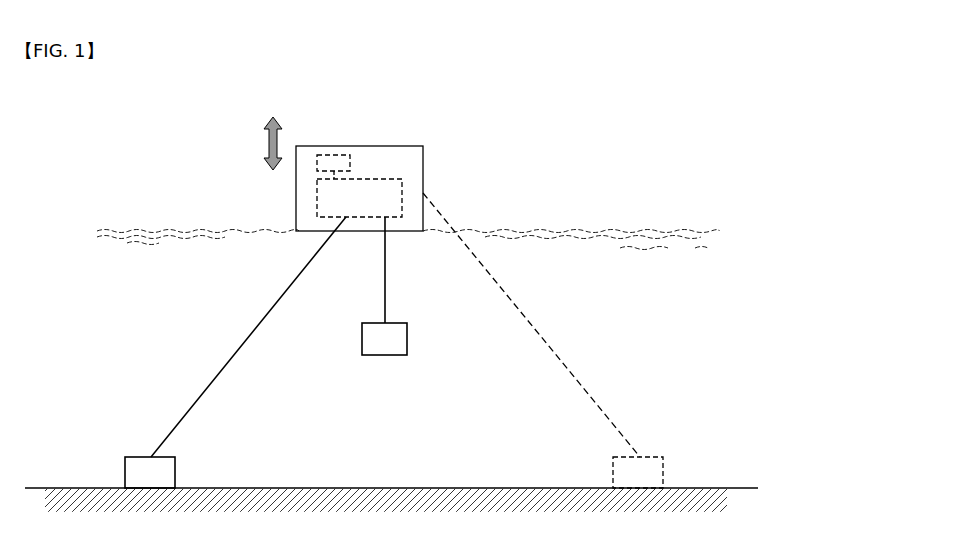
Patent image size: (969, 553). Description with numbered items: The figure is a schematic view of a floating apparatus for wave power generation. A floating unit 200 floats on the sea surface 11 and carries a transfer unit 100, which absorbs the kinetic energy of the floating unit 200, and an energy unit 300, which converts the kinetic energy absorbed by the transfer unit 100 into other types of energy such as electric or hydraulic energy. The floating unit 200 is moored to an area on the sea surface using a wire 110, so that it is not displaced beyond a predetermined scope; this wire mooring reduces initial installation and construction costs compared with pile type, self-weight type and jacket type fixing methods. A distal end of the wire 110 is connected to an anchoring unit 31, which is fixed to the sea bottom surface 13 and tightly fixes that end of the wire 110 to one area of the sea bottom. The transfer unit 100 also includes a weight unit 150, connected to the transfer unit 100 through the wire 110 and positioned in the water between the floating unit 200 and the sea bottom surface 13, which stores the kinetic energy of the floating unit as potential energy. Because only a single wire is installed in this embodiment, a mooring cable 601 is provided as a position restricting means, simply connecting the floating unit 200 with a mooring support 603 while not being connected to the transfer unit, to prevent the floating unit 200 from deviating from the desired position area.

The sea surface 11 is at (163, 232).
The sea bottom surface 13 is at (228, 488).
The anchoring unit 31 is at (125, 460).
The transfer unit 100 is at (384, 179).
The wire 110 is at (240, 345).
The weight unit 150 is at (407, 330).
The floating unit 200 is at (423, 168).
The energy unit 300 is at (339, 154).
The mooring cable 601 is at (543, 337).
The mooring support 603 is at (652, 457).